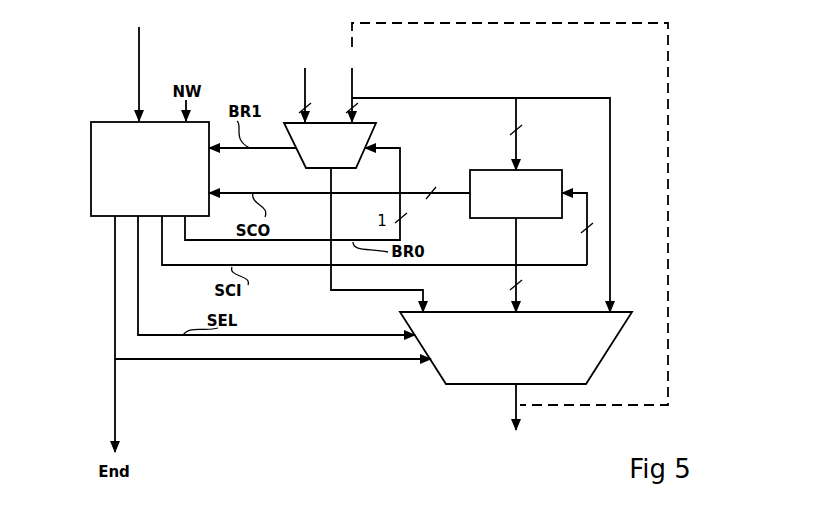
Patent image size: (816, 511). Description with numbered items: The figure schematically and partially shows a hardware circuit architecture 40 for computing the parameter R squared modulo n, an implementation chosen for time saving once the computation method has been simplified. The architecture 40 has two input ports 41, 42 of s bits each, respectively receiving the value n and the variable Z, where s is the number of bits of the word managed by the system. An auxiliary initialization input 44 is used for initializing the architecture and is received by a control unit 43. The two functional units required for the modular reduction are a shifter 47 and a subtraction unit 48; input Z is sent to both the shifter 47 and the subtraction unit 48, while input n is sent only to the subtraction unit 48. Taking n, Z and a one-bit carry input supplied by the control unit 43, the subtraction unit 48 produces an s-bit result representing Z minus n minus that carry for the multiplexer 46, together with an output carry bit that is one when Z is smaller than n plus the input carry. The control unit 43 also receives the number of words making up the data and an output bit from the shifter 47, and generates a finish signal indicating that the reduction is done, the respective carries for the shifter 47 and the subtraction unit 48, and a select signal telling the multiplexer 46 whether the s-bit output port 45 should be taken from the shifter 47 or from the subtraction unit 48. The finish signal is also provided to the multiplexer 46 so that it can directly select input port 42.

The circuit architecture 40 is at (318, 402).
The input port 41 is at (305, 92).
The input port 42 is at (352, 82).
The control unit 43 is at (91, 188).
The auxiliary input 44 is at (139, 63).
The output port 45 is at (520, 415).
The multiplexer 46 is at (458, 384).
The shifter 47 is at (538, 170).
The subtraction unit 48 is at (376, 133).